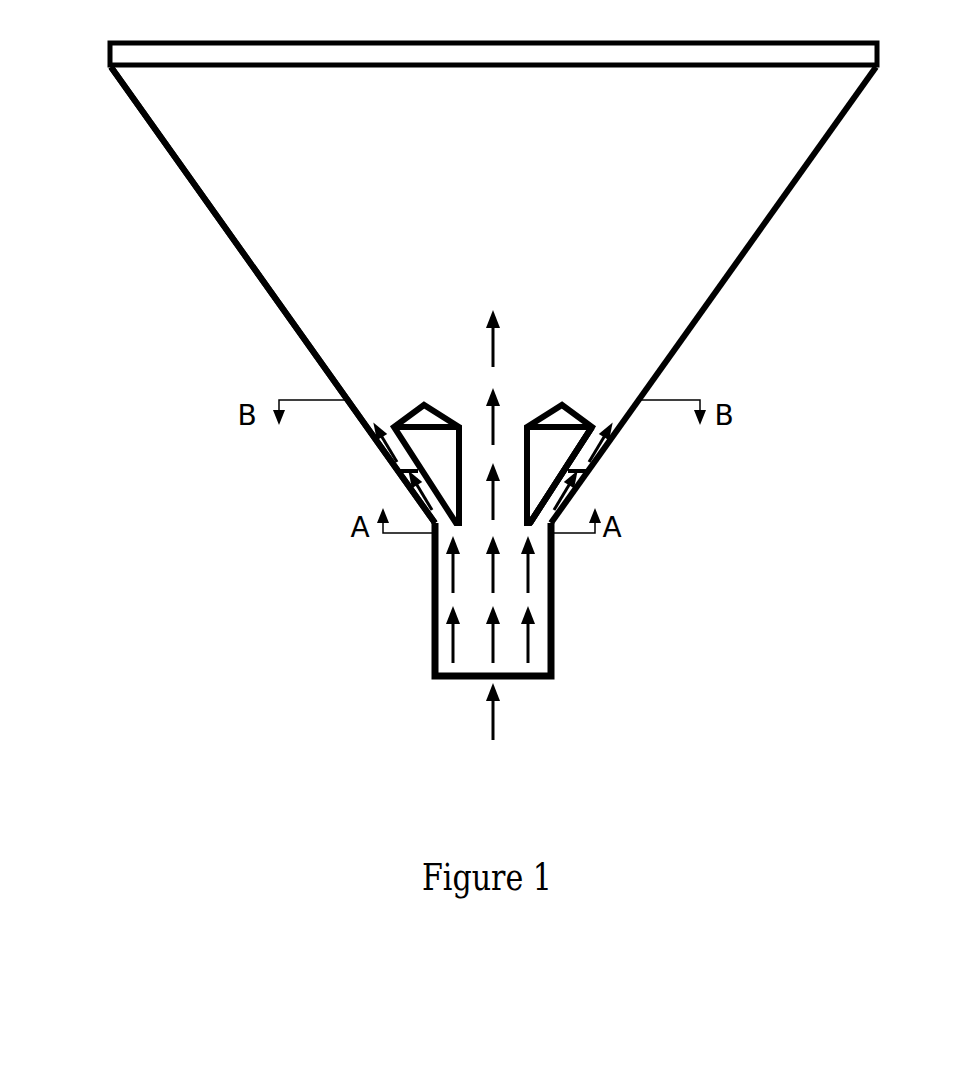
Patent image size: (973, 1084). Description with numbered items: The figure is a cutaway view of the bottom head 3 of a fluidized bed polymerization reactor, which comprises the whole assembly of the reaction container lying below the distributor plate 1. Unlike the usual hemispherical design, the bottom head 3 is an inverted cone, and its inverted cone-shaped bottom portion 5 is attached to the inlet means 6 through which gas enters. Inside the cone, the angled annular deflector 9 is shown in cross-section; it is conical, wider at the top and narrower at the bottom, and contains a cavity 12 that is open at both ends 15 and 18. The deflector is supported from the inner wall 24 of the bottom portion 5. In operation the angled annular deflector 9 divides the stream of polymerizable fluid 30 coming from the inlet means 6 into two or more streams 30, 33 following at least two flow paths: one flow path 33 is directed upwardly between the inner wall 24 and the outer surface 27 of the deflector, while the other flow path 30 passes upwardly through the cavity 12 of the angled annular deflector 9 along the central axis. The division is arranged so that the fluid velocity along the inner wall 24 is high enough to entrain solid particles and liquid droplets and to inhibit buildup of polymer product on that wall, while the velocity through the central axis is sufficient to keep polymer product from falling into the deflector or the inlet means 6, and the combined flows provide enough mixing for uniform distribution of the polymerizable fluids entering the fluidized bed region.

The distributor plate 1 is at (858, 55).
The bottom head 3 is at (822, 287).
The bottom portion 5 is at (590, 482).
The inlet means 6 is at (555, 612).
The angled annular deflector 9 is at (555, 448).
The cavity 12 is at (595, 473).
The open end 15 is at (483, 528).
The open end 18 is at (511, 427).
The inner wall 24 is at (273, 295).
The outer surface 27 is at (580, 460).
The stream of polymerizable fluid 30 is at (485, 463).
The flow path 33 is at (412, 504).